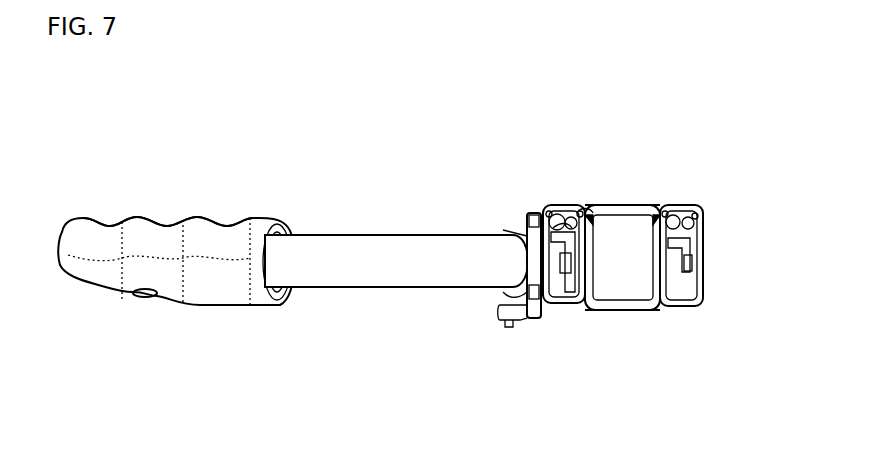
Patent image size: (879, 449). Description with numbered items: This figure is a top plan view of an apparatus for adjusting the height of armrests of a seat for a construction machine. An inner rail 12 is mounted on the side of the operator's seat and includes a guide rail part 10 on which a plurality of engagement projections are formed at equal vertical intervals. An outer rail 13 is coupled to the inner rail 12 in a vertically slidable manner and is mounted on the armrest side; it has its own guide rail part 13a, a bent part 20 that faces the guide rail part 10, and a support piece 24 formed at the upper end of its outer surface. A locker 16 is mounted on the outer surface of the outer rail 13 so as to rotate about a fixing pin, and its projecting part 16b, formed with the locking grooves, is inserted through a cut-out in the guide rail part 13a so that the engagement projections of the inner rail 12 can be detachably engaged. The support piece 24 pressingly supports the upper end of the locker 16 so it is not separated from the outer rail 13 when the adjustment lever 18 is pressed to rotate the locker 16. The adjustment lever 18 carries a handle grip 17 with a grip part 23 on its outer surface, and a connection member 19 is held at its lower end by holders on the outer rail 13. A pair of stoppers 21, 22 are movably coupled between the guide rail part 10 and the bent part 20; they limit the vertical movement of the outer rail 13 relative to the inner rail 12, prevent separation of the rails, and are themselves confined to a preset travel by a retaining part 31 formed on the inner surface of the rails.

The guide rail part 10 is at (683, 263).
The inner rail 12 is at (633, 307).
The outer rail 13 is at (622, 207).
The guide rail part 13a is at (686, 300).
The locker 16 is at (530, 212).
The projecting part 16b is at (573, 305).
The handle grip 17 is at (208, 300).
The adjustment lever 18 is at (387, 207).
The connection member 19 is at (513, 322).
The bent part 20 is at (555, 207).
The stopper 21 is at (567, 207).
The stopper 22 is at (693, 233).
The grip part 23 is at (163, 230).
The support piece 24 is at (510, 230).
The retaining part 31 is at (548, 208).